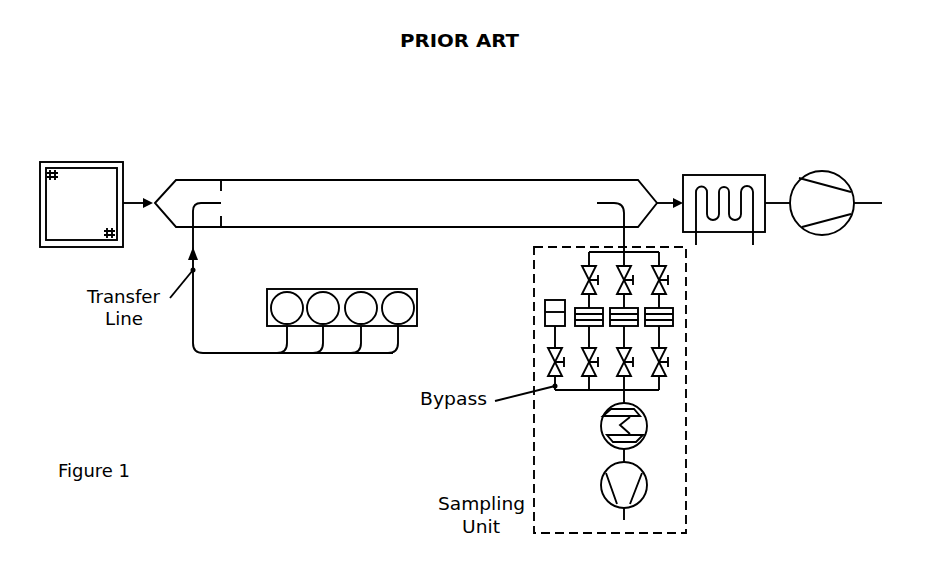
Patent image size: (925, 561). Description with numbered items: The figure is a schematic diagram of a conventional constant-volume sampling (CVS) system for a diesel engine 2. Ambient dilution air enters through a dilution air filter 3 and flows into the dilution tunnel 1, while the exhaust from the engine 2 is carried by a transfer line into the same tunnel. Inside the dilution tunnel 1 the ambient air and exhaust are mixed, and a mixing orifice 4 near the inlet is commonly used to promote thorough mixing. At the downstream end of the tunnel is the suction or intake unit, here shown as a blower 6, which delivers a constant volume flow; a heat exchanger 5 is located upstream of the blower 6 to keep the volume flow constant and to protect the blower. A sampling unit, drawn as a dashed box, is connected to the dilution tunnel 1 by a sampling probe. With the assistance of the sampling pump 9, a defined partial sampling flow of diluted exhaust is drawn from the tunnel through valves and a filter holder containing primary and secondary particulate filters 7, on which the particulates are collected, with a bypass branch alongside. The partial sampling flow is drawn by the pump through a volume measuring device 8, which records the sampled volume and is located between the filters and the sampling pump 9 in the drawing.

The dilution tunnel 1 is at (410, 180).
The diesel engine 2 is at (400, 290).
The dilution air filter 3 is at (81, 158).
The mixing orifice 4 is at (262, 158).
The heat exchanger 5 is at (699, 170).
The blower 6 is at (823, 168).
The particulate filter 7 is at (659, 316).
The volume measuring device 8 is at (647, 426).
The sampling pump 9 is at (647, 485).